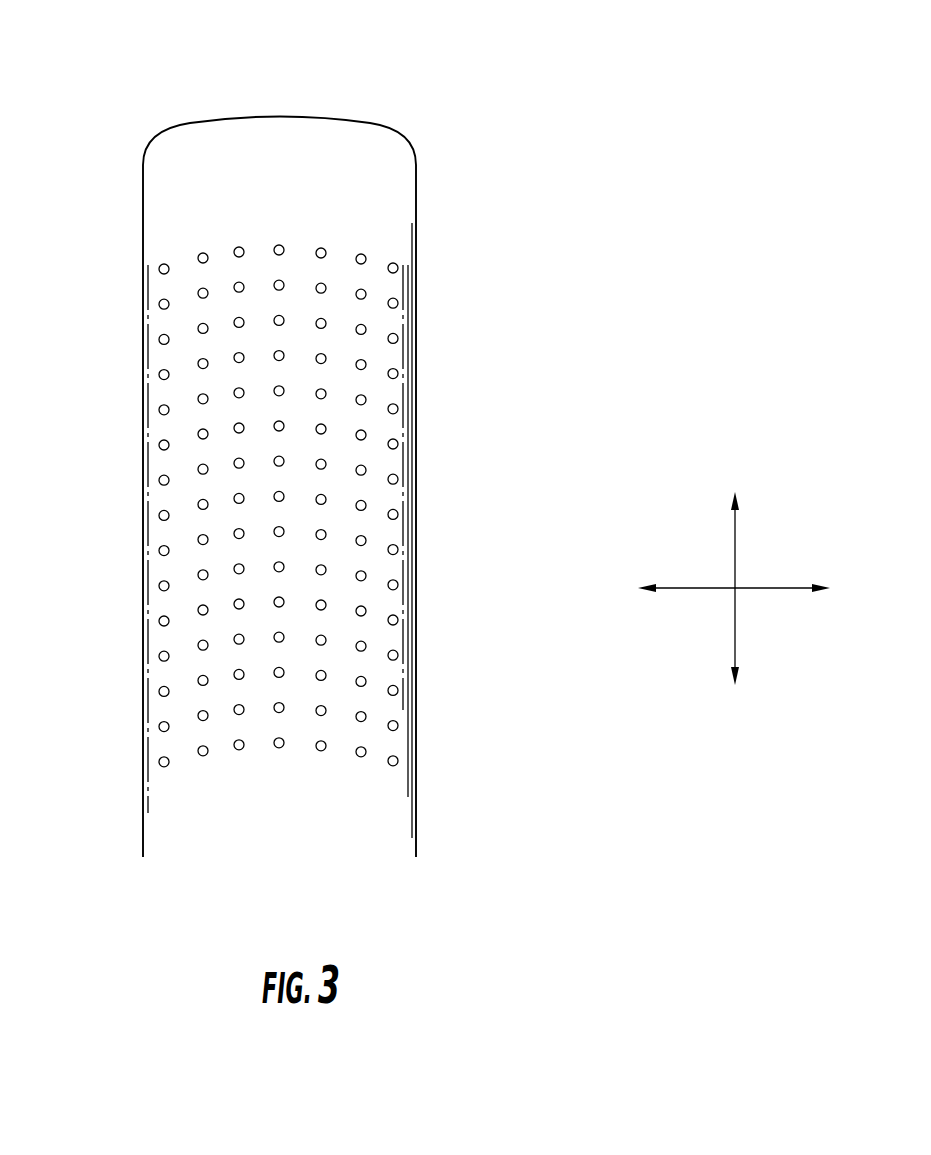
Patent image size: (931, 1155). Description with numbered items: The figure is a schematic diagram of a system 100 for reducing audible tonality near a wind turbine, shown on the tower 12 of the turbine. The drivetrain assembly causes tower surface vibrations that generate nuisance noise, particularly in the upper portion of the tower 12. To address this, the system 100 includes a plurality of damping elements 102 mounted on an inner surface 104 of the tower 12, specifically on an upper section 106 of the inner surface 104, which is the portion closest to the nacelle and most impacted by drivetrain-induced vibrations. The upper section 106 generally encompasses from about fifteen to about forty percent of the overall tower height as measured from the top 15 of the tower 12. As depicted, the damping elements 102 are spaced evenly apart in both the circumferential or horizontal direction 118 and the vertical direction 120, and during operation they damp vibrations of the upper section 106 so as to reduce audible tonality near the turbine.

The system for reducing audible tonality 100 is at (595, 317).
The damping elements 102 is at (160, 374).
The inner surface 104 is at (390, 217).
The upper section 106 is at (416, 427).
The tower 12 is at (416, 570).
The top 15 is at (196, 122).
The circumferential direction 118 is at (735, 588).
The vertical direction 120 is at (735, 628).